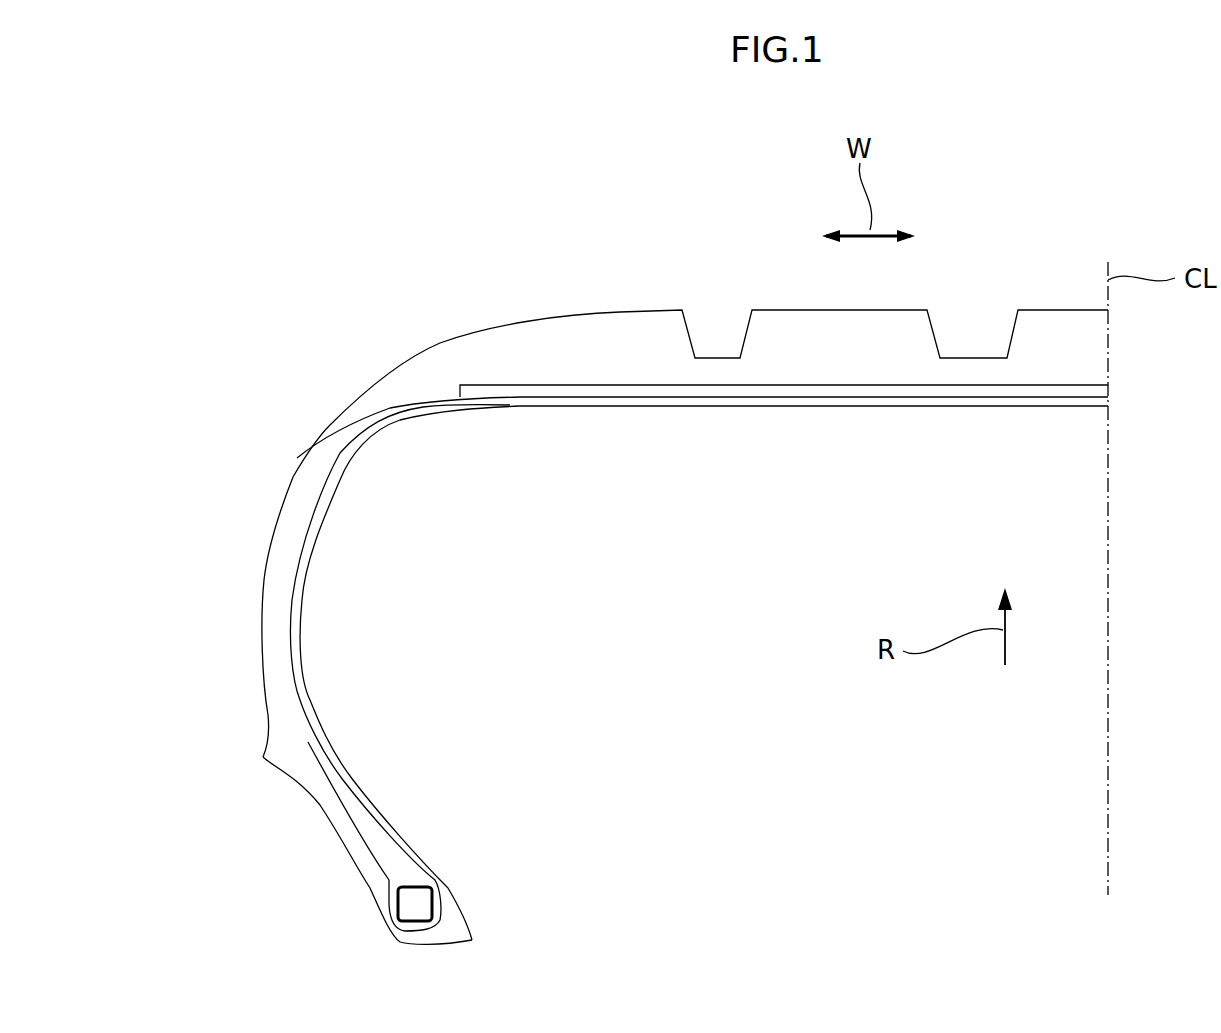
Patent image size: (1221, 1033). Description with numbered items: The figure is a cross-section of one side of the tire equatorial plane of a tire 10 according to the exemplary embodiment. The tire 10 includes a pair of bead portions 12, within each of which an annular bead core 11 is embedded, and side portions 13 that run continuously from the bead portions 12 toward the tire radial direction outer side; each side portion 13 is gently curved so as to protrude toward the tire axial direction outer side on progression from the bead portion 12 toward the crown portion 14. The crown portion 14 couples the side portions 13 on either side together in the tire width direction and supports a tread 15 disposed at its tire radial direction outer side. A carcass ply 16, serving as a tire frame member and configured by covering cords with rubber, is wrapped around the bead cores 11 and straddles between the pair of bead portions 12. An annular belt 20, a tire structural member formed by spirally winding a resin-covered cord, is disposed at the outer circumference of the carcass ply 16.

The tire 10 is at (648, 212).
The bead core 11 is at (414, 887).
The bead portion 12 is at (357, 867).
The side portion 13 is at (262, 568).
The crown portion 14 is at (724, 407).
The tread 15 is at (622, 311).
The carcass ply 16 is at (294, 580).
The belt 20 is at (614, 374).